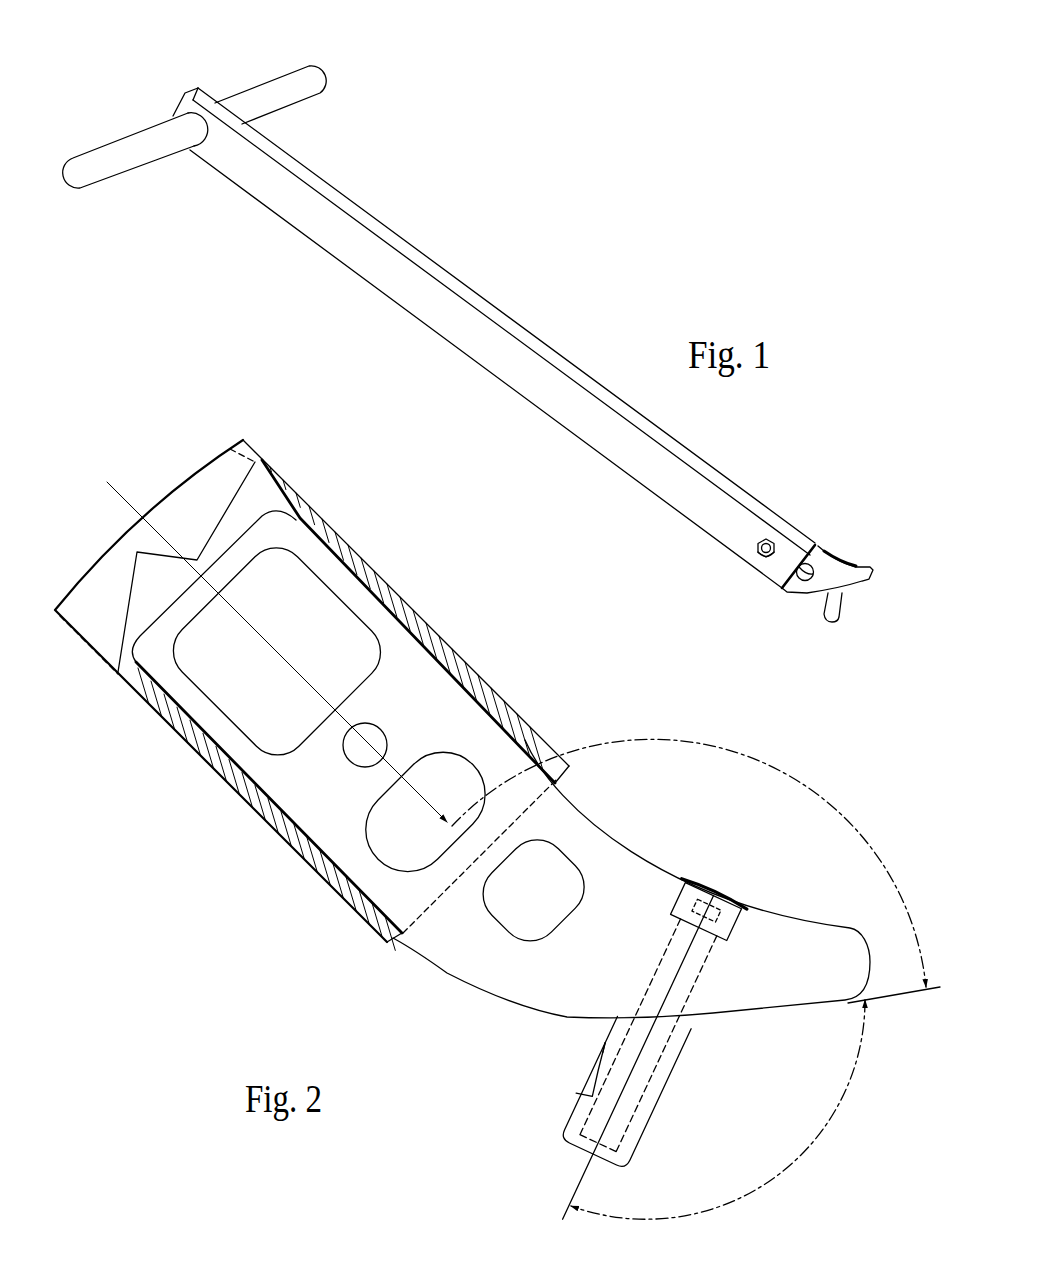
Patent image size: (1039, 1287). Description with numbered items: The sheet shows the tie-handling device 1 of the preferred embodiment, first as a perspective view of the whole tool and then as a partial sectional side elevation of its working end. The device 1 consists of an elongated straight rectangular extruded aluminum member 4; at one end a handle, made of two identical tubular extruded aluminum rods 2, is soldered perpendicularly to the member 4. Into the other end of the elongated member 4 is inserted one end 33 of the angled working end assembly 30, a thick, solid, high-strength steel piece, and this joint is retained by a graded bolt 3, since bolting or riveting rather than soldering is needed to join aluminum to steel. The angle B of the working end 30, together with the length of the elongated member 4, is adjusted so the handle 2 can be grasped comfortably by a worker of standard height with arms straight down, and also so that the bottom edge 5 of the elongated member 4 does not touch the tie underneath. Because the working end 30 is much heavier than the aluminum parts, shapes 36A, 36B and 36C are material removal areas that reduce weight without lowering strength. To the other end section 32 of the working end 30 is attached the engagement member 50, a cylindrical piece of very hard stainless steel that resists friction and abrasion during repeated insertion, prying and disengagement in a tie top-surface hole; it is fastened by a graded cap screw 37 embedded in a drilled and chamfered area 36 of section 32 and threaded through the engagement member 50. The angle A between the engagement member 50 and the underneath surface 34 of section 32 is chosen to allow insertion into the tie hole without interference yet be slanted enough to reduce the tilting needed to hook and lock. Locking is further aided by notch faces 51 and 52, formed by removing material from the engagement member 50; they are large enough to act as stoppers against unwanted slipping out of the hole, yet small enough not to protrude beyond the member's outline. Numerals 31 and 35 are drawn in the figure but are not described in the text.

In FIG. 1, the device 1 is at (415, 187).
In FIG. 2, the device 1 is at (367, 516).
In FIG. 1, the handle 2 is at (260, 88).
In FIG. 1, the graded bolt 3 is at (771, 541).
In FIG. 1, the elongated member 4 is at (427, 310).
In FIG. 2, the bottom edge 5 is at (83, 640).
In FIG. 1, the working end assembly 30 is at (831, 539).
In FIG. 2, the working end assembly 30 is at (801, 904).
In FIG. 2, the hole 31 is at (351, 766).
In FIG. 2, the other end section of working end 32 is at (808, 970).
In FIG. 2, the one end section of working end 33 is at (473, 887).
In FIG. 2, the underneath surface 34 is at (795, 1010).
In FIG. 2, the curved edge 35 is at (525, 1012).
In FIG. 2, the drilling and chamfering area 36 is at (669, 938).
In FIG. 2, the material removal area 36A is at (248, 680).
In FIG. 2, the material removal area 36B is at (405, 832).
In FIG. 2, the material removal area 36C is at (520, 898).
In FIG. 1, the graded cap screw 37 is at (843, 563).
In FIG. 2, the graded cap screw 37 is at (707, 880).
In FIG. 1, the engagement member 50 is at (840, 619).
In FIG. 2, the engagement member 50 is at (575, 1125).
In FIG. 2, the notch face 51 is at (598, 1100).
In FIG. 2, the notch face 52 is at (594, 1062).
In FIG. 2, the angle A is at (718, 1109).
In FIG. 2, the angle B is at (689, 863).